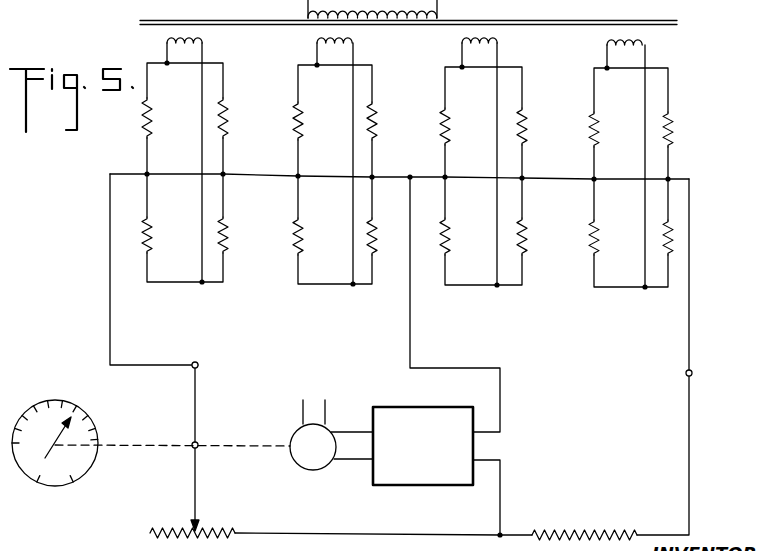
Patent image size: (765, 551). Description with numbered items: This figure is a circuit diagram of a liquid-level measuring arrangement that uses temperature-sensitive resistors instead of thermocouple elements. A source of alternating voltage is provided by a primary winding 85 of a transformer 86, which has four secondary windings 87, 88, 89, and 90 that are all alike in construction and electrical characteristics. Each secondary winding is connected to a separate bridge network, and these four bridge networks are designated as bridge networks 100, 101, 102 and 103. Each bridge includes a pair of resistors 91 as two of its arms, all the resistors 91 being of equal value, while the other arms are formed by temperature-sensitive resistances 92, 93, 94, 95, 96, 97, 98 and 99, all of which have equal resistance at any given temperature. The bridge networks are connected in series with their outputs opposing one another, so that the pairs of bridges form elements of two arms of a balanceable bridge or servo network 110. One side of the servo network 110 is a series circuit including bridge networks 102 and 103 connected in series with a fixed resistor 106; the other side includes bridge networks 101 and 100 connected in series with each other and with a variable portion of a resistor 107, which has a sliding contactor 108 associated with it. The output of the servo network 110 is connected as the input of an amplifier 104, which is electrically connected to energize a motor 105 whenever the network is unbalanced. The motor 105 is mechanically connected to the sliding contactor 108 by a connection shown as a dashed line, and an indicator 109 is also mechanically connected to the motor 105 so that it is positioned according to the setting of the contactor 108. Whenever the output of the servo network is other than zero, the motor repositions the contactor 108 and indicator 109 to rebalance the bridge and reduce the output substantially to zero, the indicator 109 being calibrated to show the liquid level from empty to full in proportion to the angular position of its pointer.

The primary winding 85 is at (438, 14).
The transformer 86 is at (582, 18).
The secondary winding 87 is at (203, 40).
The secondary winding 88 is at (354, 42).
The secondary winding 89 is at (498, 42).
The secondary winding 90 is at (646, 45).
The resistor 91 is at (222, 118).
The temperature-sensitive resistor 92 is at (152, 221).
The temperature-sensitive resistor 93 is at (237, 216).
The temperature-sensitive resistor 94 is at (312, 218).
The temperature-sensitive resistor 95 is at (377, 223).
The temperature-sensitive resistor 96 is at (450, 224).
The temperature-sensitive resistor 97 is at (527, 224).
The temperature-sensitive resistor 98 is at (599, 224).
The temperature-sensitive resistor 99 is at (673, 228).
The bridge network 100 is at (201, 160).
The bridge network 101 is at (347, 161).
The bridge network 102 is at (498, 163).
The bridge network 103 is at (655, 164).
The amplifier 104 is at (400, 418).
The motor 105 is at (313, 470).
The fixed resistor 106 is at (598, 530).
The resistor 107 is at (218, 530).
The sliding contactor 108 is at (193, 506).
The indicator 109 is at (44, 470).
The servo network 110 is at (520, 333).